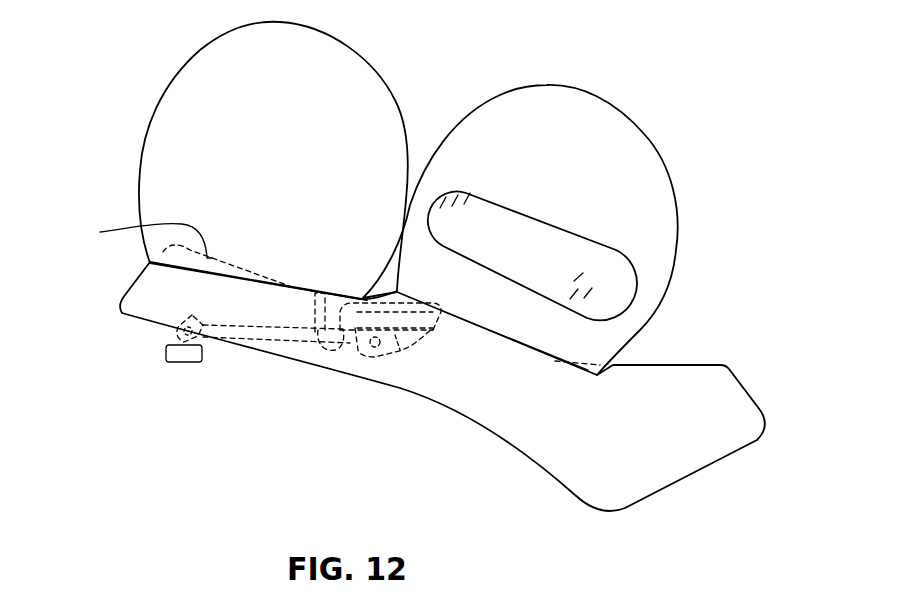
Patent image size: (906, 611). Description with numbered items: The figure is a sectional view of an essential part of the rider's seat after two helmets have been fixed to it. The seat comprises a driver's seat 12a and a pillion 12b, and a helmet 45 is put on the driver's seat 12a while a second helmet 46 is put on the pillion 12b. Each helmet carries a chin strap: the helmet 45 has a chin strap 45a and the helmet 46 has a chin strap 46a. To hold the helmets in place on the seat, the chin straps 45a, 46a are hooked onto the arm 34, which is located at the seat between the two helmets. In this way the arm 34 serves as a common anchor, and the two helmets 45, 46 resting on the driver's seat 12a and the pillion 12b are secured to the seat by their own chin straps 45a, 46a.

The driver's seat 12a is at (678, 364).
The pillion 12b is at (100, 232).
The arm 34 is at (233, 338).
The helmet 45 is at (642, 168).
The chin strap 45a is at (343, 338).
The helmet 46 is at (213, 148).
The chin strap 46a is at (312, 310).